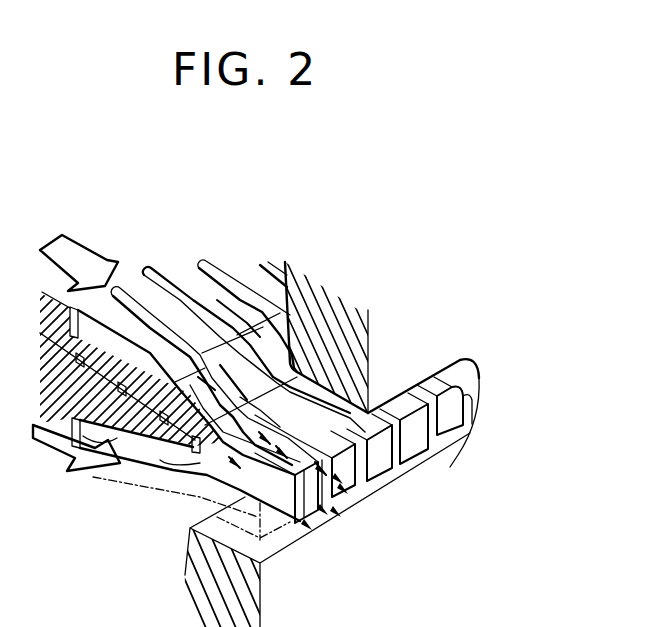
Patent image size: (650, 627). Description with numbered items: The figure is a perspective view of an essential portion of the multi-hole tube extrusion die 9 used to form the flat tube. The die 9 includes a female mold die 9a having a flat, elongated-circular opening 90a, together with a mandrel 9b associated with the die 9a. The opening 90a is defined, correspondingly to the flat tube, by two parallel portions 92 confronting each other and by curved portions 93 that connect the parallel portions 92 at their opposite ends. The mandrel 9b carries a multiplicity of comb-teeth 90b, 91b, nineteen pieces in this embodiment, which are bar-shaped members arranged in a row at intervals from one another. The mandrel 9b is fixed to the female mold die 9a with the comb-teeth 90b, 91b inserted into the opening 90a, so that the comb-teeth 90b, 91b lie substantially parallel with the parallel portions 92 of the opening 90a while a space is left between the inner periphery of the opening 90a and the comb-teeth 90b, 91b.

The multi-hole tube extrusion die 9 is at (333, 230).
The female mold die 9a is at (432, 332).
The mandrel 9b is at (188, 264).
The opening 90a is at (478, 413).
The comb-teeth 90b is at (455, 428).
The comb-teeth 91b is at (416, 447).
The parallel portions 92 is at (288, 536).
The curved portions 93 is at (474, 374).